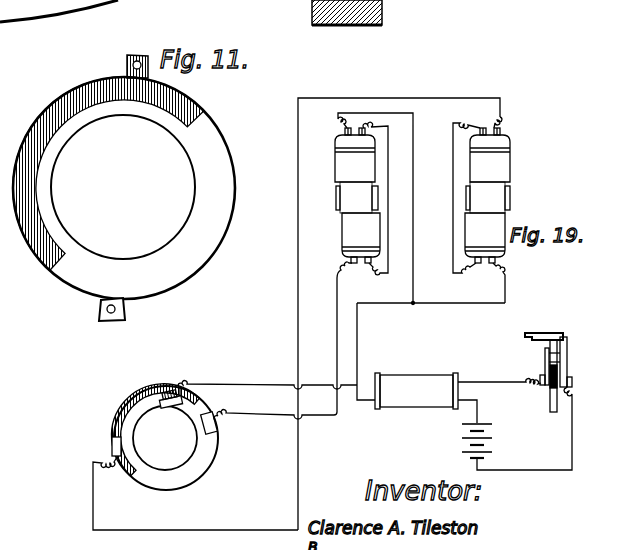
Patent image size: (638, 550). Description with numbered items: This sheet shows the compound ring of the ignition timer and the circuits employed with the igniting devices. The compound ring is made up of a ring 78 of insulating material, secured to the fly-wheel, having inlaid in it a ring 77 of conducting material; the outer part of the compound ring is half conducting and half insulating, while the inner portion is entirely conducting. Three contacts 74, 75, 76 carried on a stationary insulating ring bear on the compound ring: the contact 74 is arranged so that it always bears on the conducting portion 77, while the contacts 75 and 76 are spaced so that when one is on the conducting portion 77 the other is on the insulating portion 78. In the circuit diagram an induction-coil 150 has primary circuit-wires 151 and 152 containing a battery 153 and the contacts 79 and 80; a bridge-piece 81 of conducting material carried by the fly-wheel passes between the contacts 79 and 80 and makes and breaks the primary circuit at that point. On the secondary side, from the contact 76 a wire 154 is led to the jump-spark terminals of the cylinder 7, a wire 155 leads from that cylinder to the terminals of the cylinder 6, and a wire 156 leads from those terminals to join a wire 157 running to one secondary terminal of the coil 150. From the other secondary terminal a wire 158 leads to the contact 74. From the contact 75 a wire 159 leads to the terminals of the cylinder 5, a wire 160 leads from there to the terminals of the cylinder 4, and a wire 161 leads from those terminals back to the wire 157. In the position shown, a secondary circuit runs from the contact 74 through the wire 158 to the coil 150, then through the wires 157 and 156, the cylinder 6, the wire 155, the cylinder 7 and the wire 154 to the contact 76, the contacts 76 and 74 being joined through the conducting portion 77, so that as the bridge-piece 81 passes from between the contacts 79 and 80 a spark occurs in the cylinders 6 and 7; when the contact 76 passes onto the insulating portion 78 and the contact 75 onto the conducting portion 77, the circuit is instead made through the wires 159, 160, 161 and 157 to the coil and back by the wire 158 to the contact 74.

In FIG. 19, the cylinder 4 is at (487, 222).
In FIG. 19, the cylinder 5 is at (490, 155).
In FIG. 19, the cylinder 6 is at (355, 155).
In FIG. 19, the cylinder 7 is at (358, 222).
In FIG. 19, the contact 74 is at (170, 410).
In FIG. 19, the contact 75 is at (112, 446).
In FIG. 19, the contact 76 is at (216, 422).
In FIG. 11, the ring of conducting material 77 is at (124, 199).
In FIG. 19, the ring of conducting material 77 is at (166, 438).
In FIG. 11, the ring of insulating material 78 is at (63, 98).
In FIG. 19, the ring of insulating material 78 is at (148, 388).
In FIG. 19, the circuit terminal or contact 79 is at (566, 358).
In FIG. 19, the circuit terminal or contact 80 is at (546, 357).
In FIG. 19, the bridge-piece 81 is at (544, 339).
In FIG. 19, the induction-coil 150 is at (416, 391).
In FIG. 19, the primary circuit-wire 151 is at (478, 419).
In FIG. 19, the primary circuit-wire 152 is at (499, 374).
In FIG. 19, the battery 153 is at (499, 428).
In FIG. 19, the wire 154 is at (283, 348).
In FIG. 19, the wire 155 is at (389, 223).
In FIG. 19, the wire 156 is at (421, 137).
In FIG. 19, the wire 157 is at (382, 305).
In FIG. 19, the wire 158 is at (267, 382).
In FIG. 19, the wire 159 is at (200, 528).
In FIG. 19, the wire 160 is at (453, 178).
In FIG. 19, the wire 161 is at (492, 305).